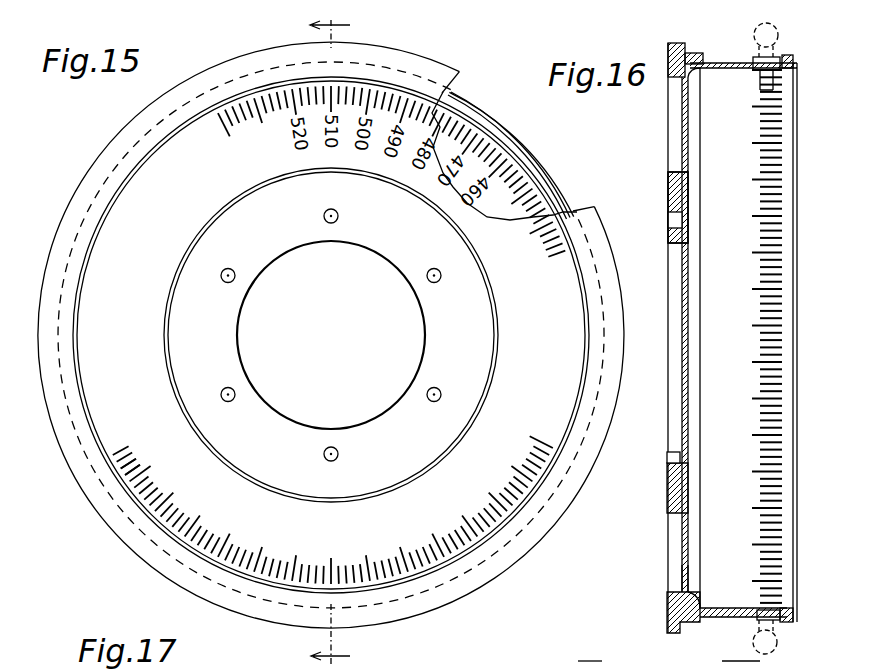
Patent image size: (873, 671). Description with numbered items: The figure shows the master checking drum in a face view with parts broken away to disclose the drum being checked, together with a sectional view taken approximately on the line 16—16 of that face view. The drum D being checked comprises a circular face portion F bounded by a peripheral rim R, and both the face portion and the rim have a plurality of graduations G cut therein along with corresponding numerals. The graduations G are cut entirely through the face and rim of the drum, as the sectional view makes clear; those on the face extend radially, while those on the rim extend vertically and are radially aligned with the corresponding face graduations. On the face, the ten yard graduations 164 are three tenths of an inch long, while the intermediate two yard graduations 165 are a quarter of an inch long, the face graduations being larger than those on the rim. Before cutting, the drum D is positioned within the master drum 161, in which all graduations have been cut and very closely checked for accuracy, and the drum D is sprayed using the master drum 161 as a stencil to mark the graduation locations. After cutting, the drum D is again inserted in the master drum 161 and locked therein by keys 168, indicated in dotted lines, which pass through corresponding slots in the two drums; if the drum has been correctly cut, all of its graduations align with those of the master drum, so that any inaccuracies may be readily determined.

In FIG. 15, the section line 16— 16 is at (342, 342).
In FIG. 15, the ten yard face graduations 164 is at (372, 575).
In FIG. 15, the two yard intermediate face graduations 165 is at (437, 577).
In FIG. 16, the master drum 161 is at (656, 617).
In FIG. 16, the keys 168 is at (753, 35).
In FIG. 15, the drum D is at (526, 150).
In FIG. 16, the drum D is at (797, 501).
In FIG. 16, the circular face portion F is at (696, 189).
In FIG. 16, the peripheral rim R is at (780, 175).
In FIG. 16, the graduations G is at (682, 580).